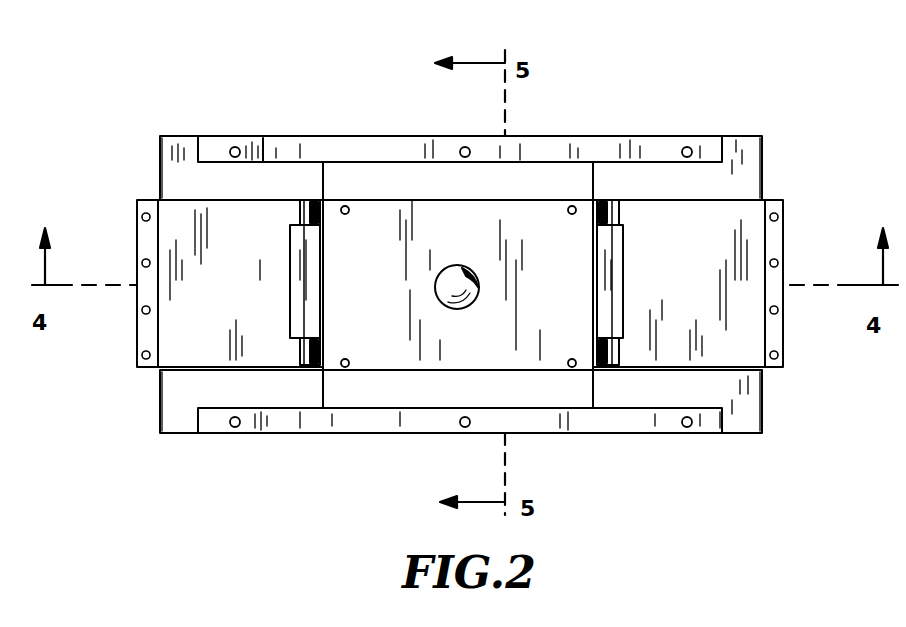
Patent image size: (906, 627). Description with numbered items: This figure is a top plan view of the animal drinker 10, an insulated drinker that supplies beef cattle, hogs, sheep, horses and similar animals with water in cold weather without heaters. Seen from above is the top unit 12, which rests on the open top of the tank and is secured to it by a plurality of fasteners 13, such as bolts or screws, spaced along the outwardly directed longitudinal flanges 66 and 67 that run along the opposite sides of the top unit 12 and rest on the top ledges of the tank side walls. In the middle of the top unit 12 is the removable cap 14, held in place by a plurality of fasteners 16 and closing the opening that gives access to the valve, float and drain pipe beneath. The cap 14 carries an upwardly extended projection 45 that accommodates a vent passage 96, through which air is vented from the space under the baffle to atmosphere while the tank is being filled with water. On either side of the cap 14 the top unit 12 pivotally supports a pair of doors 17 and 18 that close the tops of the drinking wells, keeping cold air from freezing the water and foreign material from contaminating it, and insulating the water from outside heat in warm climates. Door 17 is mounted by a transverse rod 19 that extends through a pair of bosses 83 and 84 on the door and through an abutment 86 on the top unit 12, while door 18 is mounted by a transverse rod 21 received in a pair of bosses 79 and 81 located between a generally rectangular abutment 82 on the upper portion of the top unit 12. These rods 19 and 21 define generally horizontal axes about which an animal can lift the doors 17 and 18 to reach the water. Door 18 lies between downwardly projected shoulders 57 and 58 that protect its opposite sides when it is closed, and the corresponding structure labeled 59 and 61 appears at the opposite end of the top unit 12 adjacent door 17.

The animal drinker 10 is at (636, 92).
The top unit 12 is at (393, 165).
The fasteners 13 is at (235, 147).
The cap 14 is at (536, 232).
The fasteners 16 is at (349, 360).
The door 17 is at (226, 296).
The door 18 is at (702, 296).
The transverse rod 19 is at (304, 200).
The transverse rod 21 is at (612, 200).
The projection 45 is at (452, 292).
The shoulder 57 is at (650, 393).
The shoulder 58 is at (733, 180).
The lower left rail end 59 is at (195, 390).
The upper left rail end 61 is at (183, 178).
The longitudinal flange 66 is at (326, 433).
The longitudinal flange 67 is at (345, 150).
The boss 79 is at (622, 352).
The boss 81 is at (618, 214).
The abutment 82 is at (617, 322).
The boss 83 is at (302, 213).
The boss 84 is at (302, 352).
The abutment 86 is at (305, 316).
The vent passage 96 is at (470, 276).